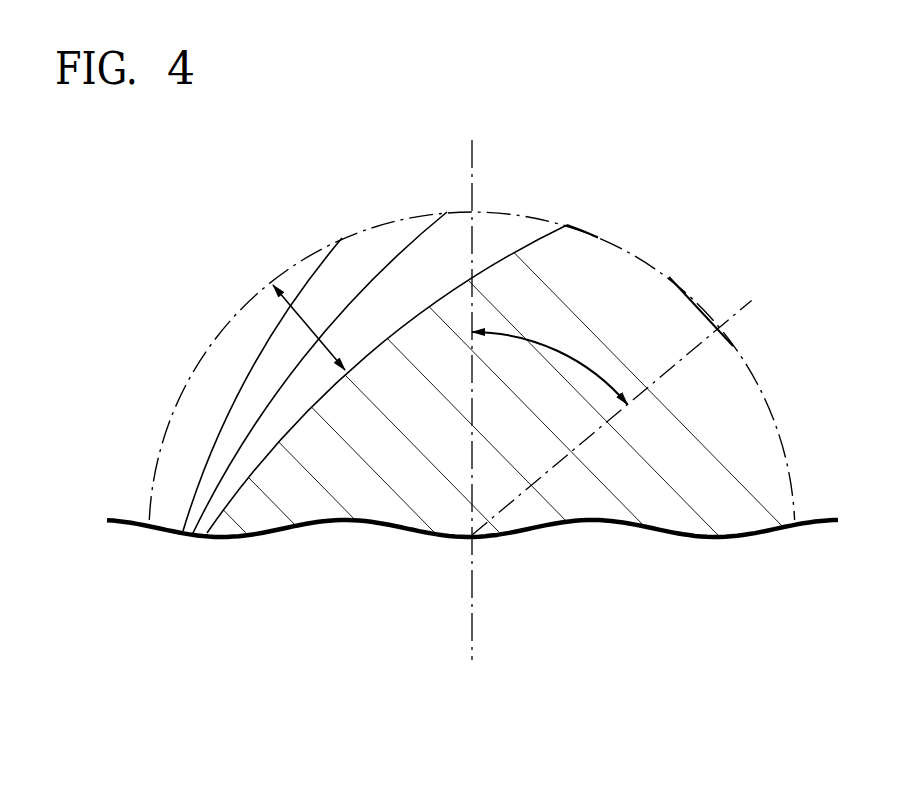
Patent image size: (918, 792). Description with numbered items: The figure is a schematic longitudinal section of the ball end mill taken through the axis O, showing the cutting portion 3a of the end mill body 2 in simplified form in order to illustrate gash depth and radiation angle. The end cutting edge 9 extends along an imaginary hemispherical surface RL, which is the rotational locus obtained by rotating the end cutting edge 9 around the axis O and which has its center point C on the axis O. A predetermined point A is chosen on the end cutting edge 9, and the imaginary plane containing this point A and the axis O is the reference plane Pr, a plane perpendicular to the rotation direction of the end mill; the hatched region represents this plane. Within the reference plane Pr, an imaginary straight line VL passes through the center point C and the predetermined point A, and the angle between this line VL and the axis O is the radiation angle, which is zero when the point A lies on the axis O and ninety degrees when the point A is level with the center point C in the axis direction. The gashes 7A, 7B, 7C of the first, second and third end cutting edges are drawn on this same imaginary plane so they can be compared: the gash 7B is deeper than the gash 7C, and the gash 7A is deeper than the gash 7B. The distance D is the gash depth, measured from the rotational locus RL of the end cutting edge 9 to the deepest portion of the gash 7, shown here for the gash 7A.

The end mill body 2 is at (471, 327).
The cutting portion 3a is at (684, 193).
The gash 7 is at (264, 323).
The gash of the first end cutting edge 7A is at (447, 250).
The gash of the second end cutting edge 7B is at (358, 268).
The gash of the third end cutting edge 7C is at (207, 410).
The end cutting edge 9 is at (588, 232).
The axis O is at (474, 160).
The center point C is at (478, 538).
The imaginary hemispherical surface RL is at (683, 283).
The imaginary straight line VL is at (658, 384).
The predetermined point A is at (722, 329).
The reference plane Pr is at (668, 467).
The gash depth D is at (309, 327).